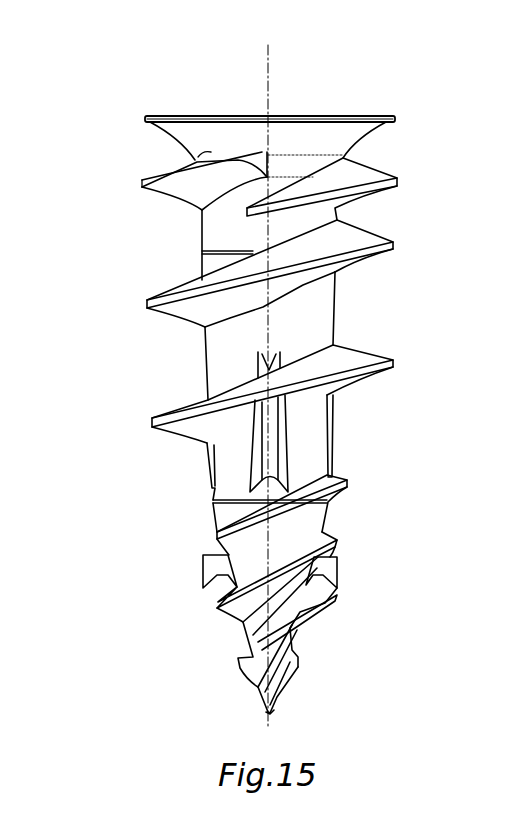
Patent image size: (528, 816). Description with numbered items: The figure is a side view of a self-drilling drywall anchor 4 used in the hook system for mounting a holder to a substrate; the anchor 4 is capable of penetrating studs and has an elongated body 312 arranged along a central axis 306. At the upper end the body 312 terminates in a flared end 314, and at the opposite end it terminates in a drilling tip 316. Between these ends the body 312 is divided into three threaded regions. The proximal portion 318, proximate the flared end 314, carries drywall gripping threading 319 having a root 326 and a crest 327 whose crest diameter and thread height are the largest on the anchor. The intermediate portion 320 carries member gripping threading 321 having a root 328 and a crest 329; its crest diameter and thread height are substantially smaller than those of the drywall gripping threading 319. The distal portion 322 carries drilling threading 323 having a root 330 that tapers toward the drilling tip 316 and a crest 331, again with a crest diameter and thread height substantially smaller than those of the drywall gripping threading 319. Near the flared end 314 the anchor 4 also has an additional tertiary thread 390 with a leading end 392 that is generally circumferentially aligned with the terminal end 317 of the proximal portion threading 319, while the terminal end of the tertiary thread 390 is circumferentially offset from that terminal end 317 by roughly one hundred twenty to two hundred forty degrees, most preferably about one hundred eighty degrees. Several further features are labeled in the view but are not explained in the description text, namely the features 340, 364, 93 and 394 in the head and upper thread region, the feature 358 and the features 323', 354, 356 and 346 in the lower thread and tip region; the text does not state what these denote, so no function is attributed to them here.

The drywall anchor 4 is at (98, 115).
The axis 306 is at (272, 72).
The head top surface 340 is at (206, 116).
The flared end 314 is at (368, 134).
The head underside 364 is at (177, 142).
The tertiary thread 390 is at (356, 168).
The terminal end of proximal portion threading 317 is at (266, 158).
The thread upper surface 93 is at (303, 187).
The thread flight 394 is at (400, 182).
The crest 327 is at (143, 182).
The leading end 392 is at (230, 215).
The root 326 is at (203, 238).
The drywall gripping threading 319 is at (393, 240).
The elongated body 312 is at (325, 307).
The proximal portion 318 is at (162, 267).
The notch 358 is at (270, 425).
The intermediate portion 320 is at (162, 457).
The root 328 is at (210, 492).
The member gripping threading 321 is at (340, 472).
The crest 329 is at (349, 485).
The thread 323' is at (331, 577).
The cutting lug 354 is at (202, 575).
The root 330 is at (242, 630).
The crest 331 is at (338, 598).
The distal portion 322 is at (190, 675).
The drilling threading 323 is at (327, 655).
The drilling tip 316 is at (278, 695).
The point edge 356 is at (268, 712).
The point 346 is at (272, 716).